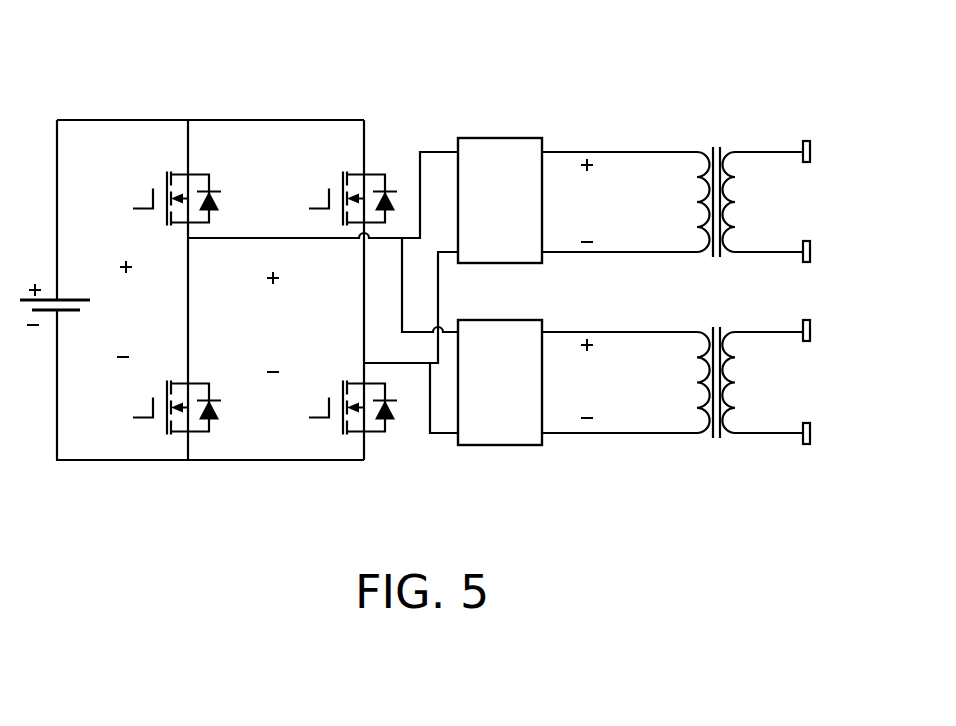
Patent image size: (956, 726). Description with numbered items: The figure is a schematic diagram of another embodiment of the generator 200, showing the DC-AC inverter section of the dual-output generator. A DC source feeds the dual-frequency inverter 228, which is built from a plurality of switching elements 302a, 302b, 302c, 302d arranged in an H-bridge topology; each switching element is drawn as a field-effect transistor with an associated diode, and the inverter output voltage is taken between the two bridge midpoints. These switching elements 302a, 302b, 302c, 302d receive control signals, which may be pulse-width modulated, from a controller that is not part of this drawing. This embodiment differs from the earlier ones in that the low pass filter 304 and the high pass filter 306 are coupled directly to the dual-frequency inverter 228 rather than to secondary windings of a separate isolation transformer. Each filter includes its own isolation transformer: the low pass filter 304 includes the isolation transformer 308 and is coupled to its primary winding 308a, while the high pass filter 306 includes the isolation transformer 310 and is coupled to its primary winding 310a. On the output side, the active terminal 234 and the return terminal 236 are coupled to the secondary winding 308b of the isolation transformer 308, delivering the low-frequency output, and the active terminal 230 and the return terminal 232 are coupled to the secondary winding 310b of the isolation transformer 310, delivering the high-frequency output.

The generator 200 is at (498, 43).
The dual-frequency inverter 228 is at (163, 99).
The switching element 302a is at (215, 176).
The switching element 302b is at (209, 393).
The switching element 302c is at (352, 180).
The switching element 302d is at (353, 428).
The low pass filter 304 is at (530, 138).
The high pass filter 306 is at (505, 446).
The isolation transformer 308 is at (716, 124).
The primary winding 308a is at (641, 150).
The secondary winding 308b is at (767, 150).
The isolation transformer 310 is at (720, 452).
The primary winding 310a is at (663, 435).
The secondary winding 310b is at (773, 435).
The active terminal 234 is at (812, 146).
The return terminal 236 is at (812, 244).
The active terminal 230 is at (812, 326).
The return terminal 232 is at (812, 426).